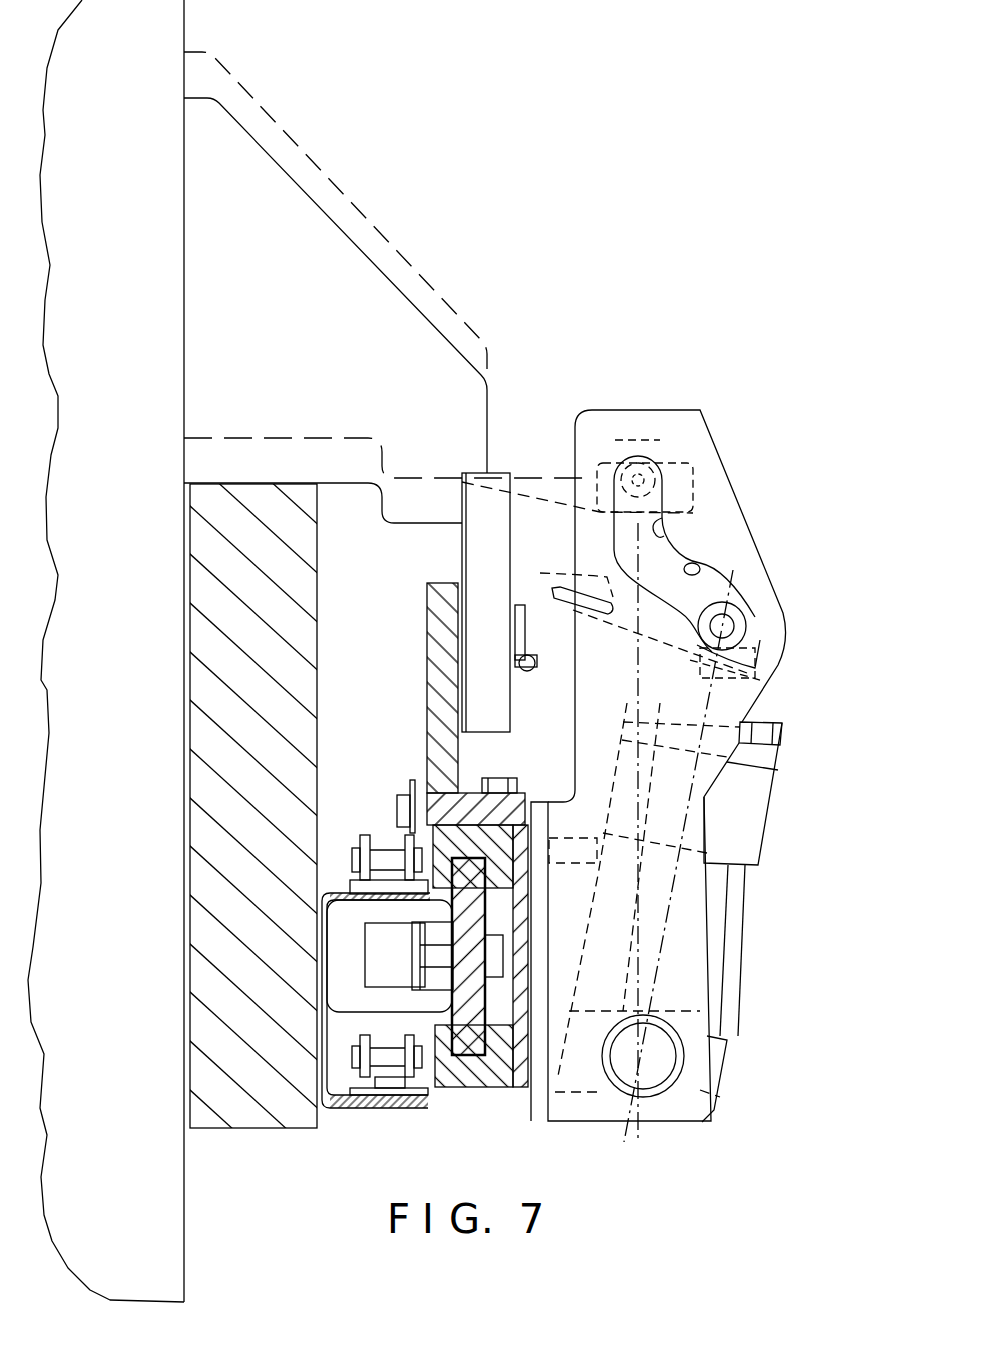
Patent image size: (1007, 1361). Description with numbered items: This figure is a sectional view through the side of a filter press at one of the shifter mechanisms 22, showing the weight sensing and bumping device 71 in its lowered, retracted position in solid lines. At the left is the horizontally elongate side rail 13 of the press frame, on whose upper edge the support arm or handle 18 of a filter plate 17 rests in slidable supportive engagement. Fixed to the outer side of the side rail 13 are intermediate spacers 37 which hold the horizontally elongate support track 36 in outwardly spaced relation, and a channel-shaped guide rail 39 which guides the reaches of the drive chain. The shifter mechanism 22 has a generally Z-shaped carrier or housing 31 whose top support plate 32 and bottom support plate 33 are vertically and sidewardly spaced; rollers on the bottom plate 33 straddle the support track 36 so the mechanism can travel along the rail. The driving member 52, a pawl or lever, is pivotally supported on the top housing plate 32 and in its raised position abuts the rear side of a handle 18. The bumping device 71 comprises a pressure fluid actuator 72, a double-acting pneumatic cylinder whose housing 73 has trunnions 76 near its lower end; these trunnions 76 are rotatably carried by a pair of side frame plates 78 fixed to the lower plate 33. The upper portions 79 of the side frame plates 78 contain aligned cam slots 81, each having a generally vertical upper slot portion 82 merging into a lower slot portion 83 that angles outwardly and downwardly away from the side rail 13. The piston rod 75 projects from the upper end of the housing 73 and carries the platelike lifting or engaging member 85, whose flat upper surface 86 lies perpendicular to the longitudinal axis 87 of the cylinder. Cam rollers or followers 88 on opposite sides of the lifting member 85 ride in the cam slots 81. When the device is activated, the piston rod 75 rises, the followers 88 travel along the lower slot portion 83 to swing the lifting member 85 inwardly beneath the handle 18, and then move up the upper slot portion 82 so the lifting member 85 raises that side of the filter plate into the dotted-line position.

The side rail 13 is at (252, 1113).
The filter plate 17 is at (175, 1243).
The support arm or handle 18 is at (303, 158).
The shifter mechanism 22 is at (541, 1136).
The carrier or housing 31 is at (427, 756).
The top support plate 32 is at (435, 693).
The bottom support plate 33 is at (522, 1073).
The support track 36 is at (463, 1038).
The intermediate spacer 37 is at (342, 912).
The channel-shaped guide rail 39 is at (392, 1108).
The driving member 52 is at (472, 550).
The weight sensing and bumping device 71 is at (814, 627).
The pressure fluid actuator 72 is at (766, 849).
The housing 73 is at (714, 905).
The piston rod 75 is at (767, 660).
The trunnions 76 is at (664, 1056).
The side frame plate 78 is at (696, 777).
The upper portion 79 is at (700, 425).
The cam slot 81 is at (656, 555).
The upper slot portion 82 is at (668, 530).
The lower slot portion 83 is at (700, 566).
The lifting or engaging member 85 is at (540, 488).
The flat upper surface 86 is at (575, 573).
The longitudinal axis 87 is at (664, 984).
The cam rollers or followers 88 is at (660, 483).